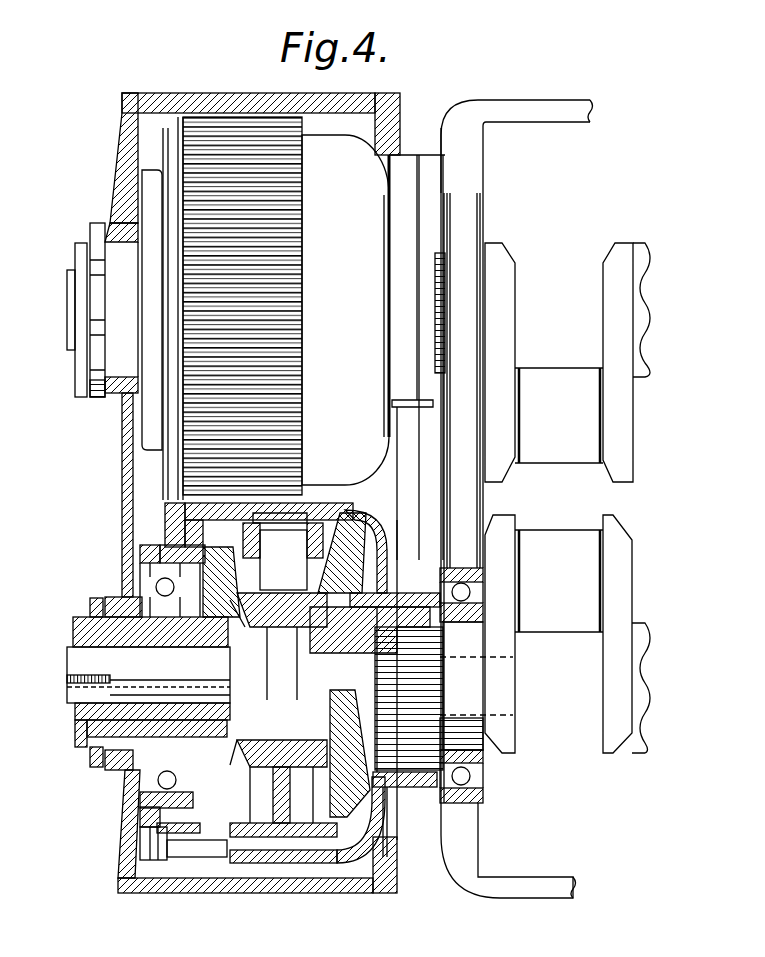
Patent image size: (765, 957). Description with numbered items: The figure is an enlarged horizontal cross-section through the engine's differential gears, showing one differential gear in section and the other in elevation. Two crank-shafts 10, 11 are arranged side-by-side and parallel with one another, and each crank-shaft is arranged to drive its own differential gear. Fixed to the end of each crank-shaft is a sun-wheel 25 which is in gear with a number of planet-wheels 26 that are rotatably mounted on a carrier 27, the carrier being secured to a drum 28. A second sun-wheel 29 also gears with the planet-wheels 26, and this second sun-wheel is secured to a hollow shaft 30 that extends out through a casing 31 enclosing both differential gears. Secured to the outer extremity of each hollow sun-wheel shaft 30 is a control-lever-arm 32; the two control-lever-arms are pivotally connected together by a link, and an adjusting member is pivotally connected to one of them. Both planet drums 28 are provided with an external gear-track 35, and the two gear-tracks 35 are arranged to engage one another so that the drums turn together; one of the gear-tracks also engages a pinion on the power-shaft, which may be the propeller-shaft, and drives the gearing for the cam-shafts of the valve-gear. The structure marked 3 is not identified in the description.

The frame bracket 3 is at (540, 112).
The crank-shaft 10 is at (645, 678).
The crank-shaft 11 is at (645, 325).
The sun-wheel 25 is at (341, 847).
The planet-wheel 26 is at (352, 525).
The carrier 27 is at (252, 613).
The drum 28 is at (353, 147).
The second sun-wheel 29 is at (233, 765).
The hollow shaft 30 is at (147, 713).
The casing 31 is at (122, 603).
The control-lever-arm 32 is at (78, 378).
The external gear-track 35 is at (292, 406).